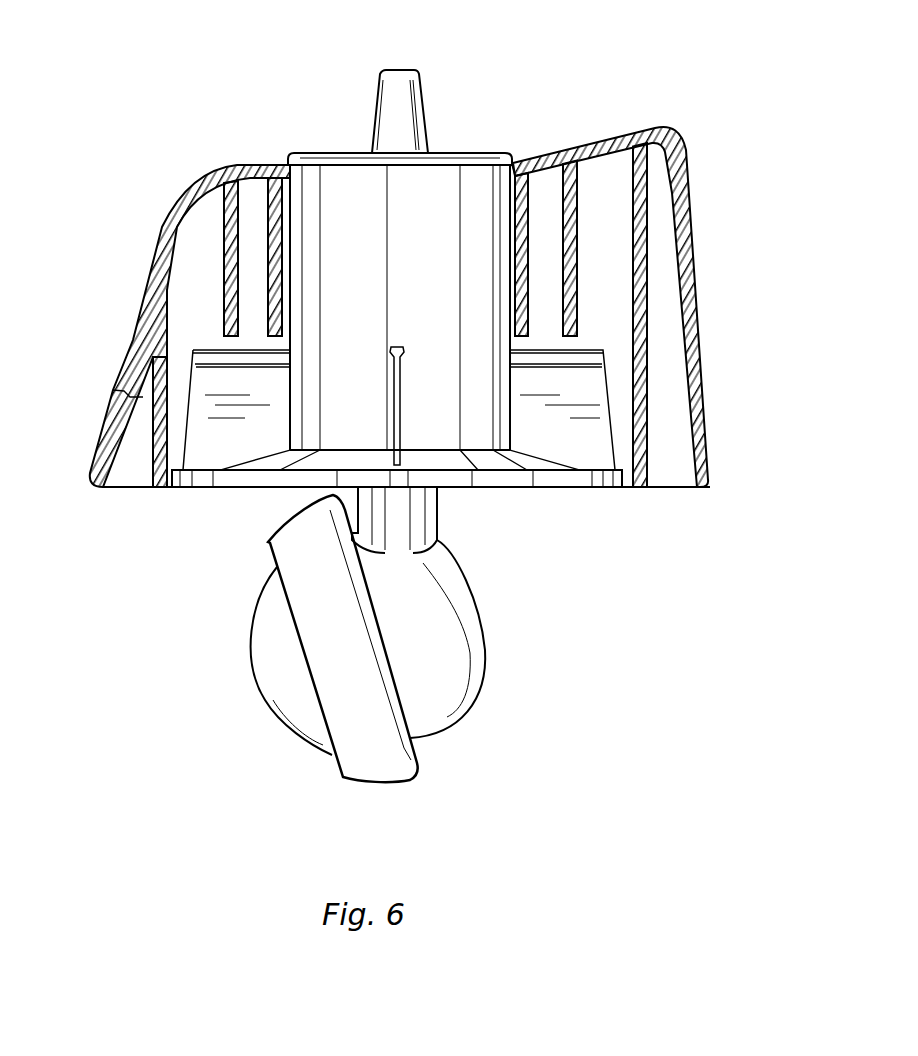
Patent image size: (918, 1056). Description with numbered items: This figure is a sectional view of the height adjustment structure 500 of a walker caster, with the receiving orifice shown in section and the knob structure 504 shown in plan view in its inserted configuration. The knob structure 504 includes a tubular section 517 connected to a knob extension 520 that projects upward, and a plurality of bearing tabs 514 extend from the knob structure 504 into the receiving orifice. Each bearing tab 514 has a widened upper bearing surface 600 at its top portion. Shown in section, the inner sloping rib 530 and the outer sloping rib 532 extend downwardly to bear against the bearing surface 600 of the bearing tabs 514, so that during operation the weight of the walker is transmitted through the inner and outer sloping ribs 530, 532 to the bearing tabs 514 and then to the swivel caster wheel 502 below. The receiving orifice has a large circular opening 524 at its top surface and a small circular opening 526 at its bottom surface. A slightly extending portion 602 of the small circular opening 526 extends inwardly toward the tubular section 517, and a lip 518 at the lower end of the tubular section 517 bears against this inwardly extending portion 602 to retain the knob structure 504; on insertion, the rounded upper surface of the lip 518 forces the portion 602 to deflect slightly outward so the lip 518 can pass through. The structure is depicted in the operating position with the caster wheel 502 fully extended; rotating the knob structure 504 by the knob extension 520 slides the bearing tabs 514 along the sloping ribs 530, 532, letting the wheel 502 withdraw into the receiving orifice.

The height adjustment structure 500 is at (170, 556).
The swivel caster wheel 502 is at (312, 783).
The knob structure 504 is at (349, 119).
The bearing tabs 514 is at (190, 390).
The tubular section 517 is at (287, 197).
The lip 518 is at (512, 163).
The knob extension 520 is at (418, 72).
The large circular opening 524 is at (628, 505).
The small circular opening 526 is at (282, 156).
The inner sloping rib 530 is at (224, 237).
The outer sloping rib 532 is at (175, 215).
The upper bearing surface 600 is at (398, 346).
The inwardly extending portion 602 is at (527, 156).